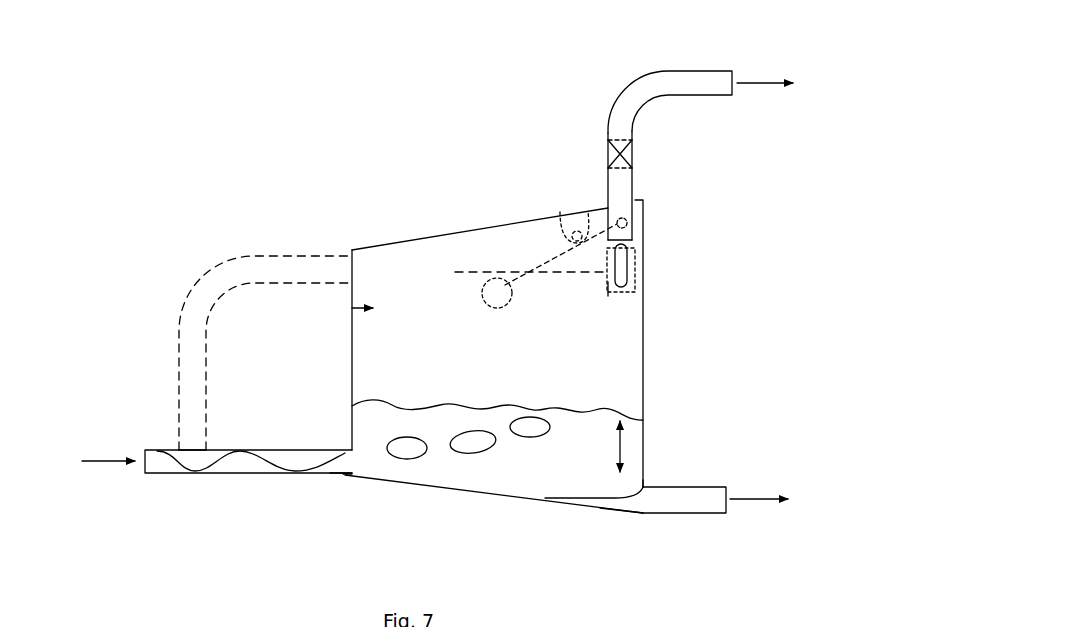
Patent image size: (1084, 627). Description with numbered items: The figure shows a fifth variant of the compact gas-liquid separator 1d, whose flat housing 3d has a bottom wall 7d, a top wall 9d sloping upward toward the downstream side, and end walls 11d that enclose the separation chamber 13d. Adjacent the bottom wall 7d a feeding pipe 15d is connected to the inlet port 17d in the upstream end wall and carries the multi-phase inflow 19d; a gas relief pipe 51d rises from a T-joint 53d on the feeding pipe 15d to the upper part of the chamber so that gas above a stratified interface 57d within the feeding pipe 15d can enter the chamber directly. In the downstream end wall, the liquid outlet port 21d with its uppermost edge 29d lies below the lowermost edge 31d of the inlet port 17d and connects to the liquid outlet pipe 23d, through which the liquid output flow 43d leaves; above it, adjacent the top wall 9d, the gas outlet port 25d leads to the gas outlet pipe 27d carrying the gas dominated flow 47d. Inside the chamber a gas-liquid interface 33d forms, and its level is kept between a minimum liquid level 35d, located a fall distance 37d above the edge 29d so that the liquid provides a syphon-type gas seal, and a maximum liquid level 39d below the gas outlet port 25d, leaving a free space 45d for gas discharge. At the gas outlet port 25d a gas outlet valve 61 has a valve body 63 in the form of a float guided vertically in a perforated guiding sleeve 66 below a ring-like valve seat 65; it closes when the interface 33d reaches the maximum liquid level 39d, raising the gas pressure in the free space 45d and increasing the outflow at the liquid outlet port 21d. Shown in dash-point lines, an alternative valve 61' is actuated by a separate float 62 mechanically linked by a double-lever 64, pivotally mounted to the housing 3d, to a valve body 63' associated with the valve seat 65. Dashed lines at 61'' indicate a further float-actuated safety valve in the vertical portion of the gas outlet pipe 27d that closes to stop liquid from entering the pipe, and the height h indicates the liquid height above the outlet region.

The gas-liquid separator 1d is at (368, 177).
The housing 3d is at (423, 236).
The bottom wall 7d is at (483, 493).
The top wall 9d is at (470, 230).
The end walls 11d is at (645, 318).
The separation chamber 13d is at (352, 308).
The feeding pipe 15d is at (248, 474).
The inlet port 17d is at (340, 476).
The multi-phase inflow 19d is at (107, 457).
The liquid outlet port 21d is at (643, 500).
The liquid outlet pipe 23d is at (690, 486).
The gas outlet port 25d is at (623, 197).
The gas outlet pipe 27d is at (690, 96).
The uppermost edge of liquid outlet port 29d is at (587, 503).
The lowermost edge of inlet port 31d is at (344, 468).
The gas-liquid interface 33d is at (390, 403).
The minimum liquid level 35d is at (536, 470).
The fall distance 37d is at (645, 480).
The maximum liquid level 39d is at (568, 276).
The liquid output flow 43d is at (753, 497).
The free space 45d is at (548, 240).
The gas dominated flow 47d is at (762, 72).
The gas relief pipe 51d is at (178, 352).
The T-joint 53d is at (177, 449).
The gas-liquid interface in feeding pipe 57d is at (222, 458).
The gas outlet valve 61 is at (603, 215).
The alternative valve 61' is at (564, 195).
The safety valve 61'' is at (596, 121).
The float 62 is at (485, 306).
The valve body 63 is at (649, 268).
The valve body 63' is at (651, 209).
The double-lever 64 is at (532, 263).
The valve seat 65 is at (628, 232).
The perforated guiding sleeve 66 is at (607, 283).
The liquid level height h is at (618, 438).